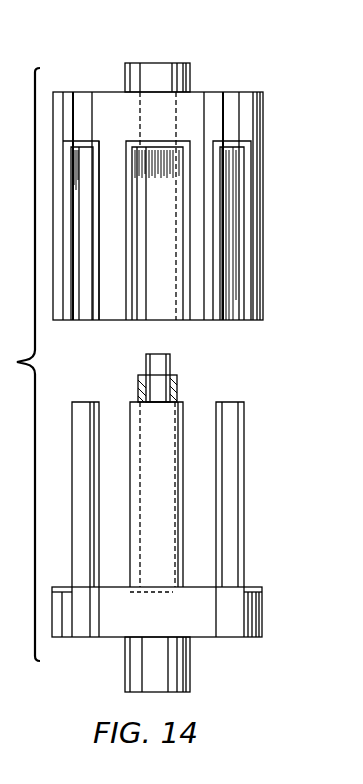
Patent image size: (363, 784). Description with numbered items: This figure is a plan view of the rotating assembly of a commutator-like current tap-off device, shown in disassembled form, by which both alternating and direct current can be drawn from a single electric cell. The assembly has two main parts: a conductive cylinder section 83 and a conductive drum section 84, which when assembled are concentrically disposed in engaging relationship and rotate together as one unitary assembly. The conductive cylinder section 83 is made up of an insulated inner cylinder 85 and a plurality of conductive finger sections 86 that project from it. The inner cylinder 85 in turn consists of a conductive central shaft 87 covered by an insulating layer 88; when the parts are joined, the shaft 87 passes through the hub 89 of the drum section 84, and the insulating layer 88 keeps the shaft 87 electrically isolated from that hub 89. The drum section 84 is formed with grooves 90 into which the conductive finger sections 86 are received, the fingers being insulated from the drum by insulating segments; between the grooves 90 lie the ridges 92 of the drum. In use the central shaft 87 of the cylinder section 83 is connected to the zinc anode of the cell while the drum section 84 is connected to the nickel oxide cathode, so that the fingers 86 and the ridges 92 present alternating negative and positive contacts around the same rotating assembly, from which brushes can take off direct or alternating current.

The conductive cylinder section 83 is at (181, 521).
The conductive drum section 84 is at (192, 189).
The insulated inner cylinder 85 is at (157, 393).
The conductive finger sections 86 is at (236, 490).
The conductive central shaft 87 is at (173, 360).
The insulating layer 88 is at (140, 380).
The hub 89 is at (190, 75).
The grooves 90 is at (235, 250).
The ridges 92 is at (213, 203).